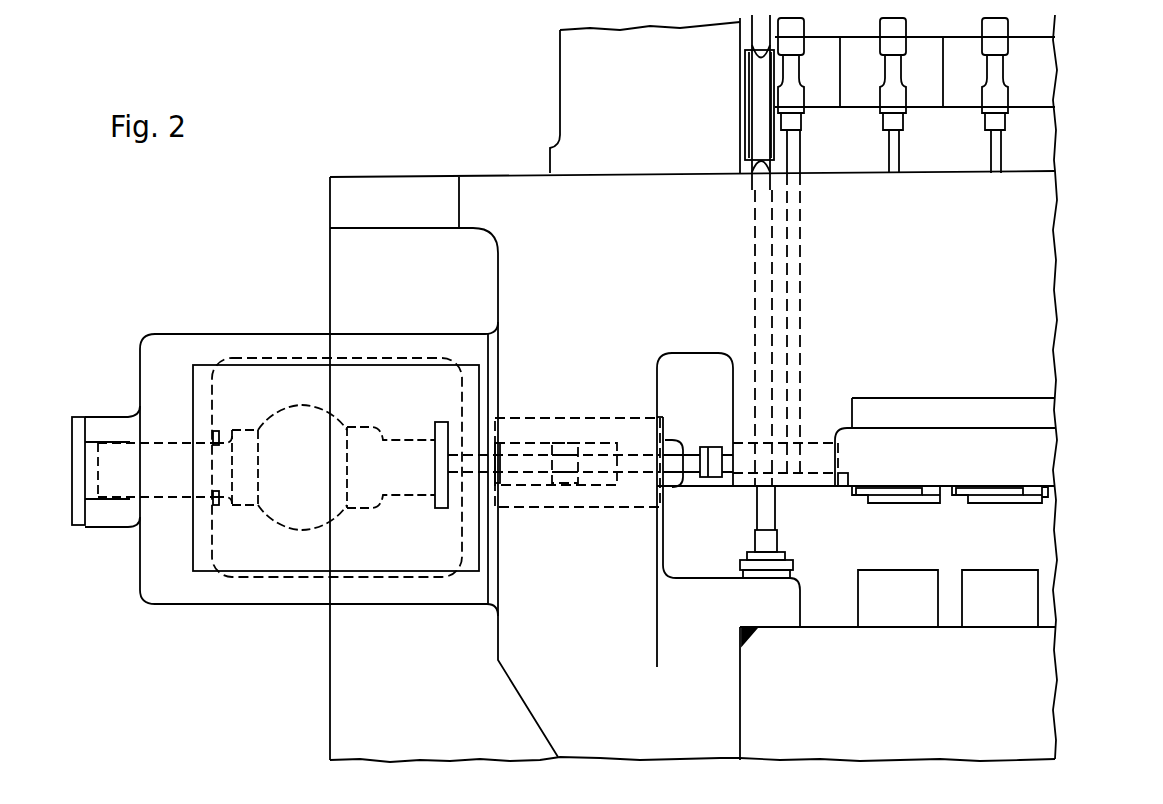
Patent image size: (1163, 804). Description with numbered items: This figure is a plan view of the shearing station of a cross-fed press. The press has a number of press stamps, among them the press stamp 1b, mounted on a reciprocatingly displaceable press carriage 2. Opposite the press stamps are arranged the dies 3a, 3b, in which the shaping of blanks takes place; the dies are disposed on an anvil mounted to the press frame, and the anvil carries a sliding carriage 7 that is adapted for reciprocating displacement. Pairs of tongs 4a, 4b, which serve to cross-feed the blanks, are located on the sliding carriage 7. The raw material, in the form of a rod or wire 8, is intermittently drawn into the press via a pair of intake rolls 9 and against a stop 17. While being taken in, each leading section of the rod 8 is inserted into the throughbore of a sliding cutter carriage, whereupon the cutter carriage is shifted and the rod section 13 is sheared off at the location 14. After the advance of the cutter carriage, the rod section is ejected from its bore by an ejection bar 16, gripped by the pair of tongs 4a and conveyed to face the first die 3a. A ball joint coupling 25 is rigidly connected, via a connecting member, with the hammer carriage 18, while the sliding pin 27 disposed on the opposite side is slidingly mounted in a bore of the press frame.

The press stamp 1b is at (915, 587).
The press carriage 2 is at (1033, 643).
The die 3a is at (868, 465).
The die 3b is at (1006, 452).
The pair of tongs 4a is at (905, 494).
The pair of tongs 4b is at (1046, 490).
The sliding carriage 7 is at (1047, 438).
The rod 8 is at (758, 42).
The pair of intake rolls 9 is at (760, 88).
The rod section 13 is at (765, 512).
The shearing location 14 is at (750, 434).
The ejection bar 16 is at (796, 250).
The stop 17 is at (762, 543).
The hammer carriage 18 is at (545, 428).
The ball joint coupling 25 is at (292, 507).
The sliding pin 27 is at (113, 468).